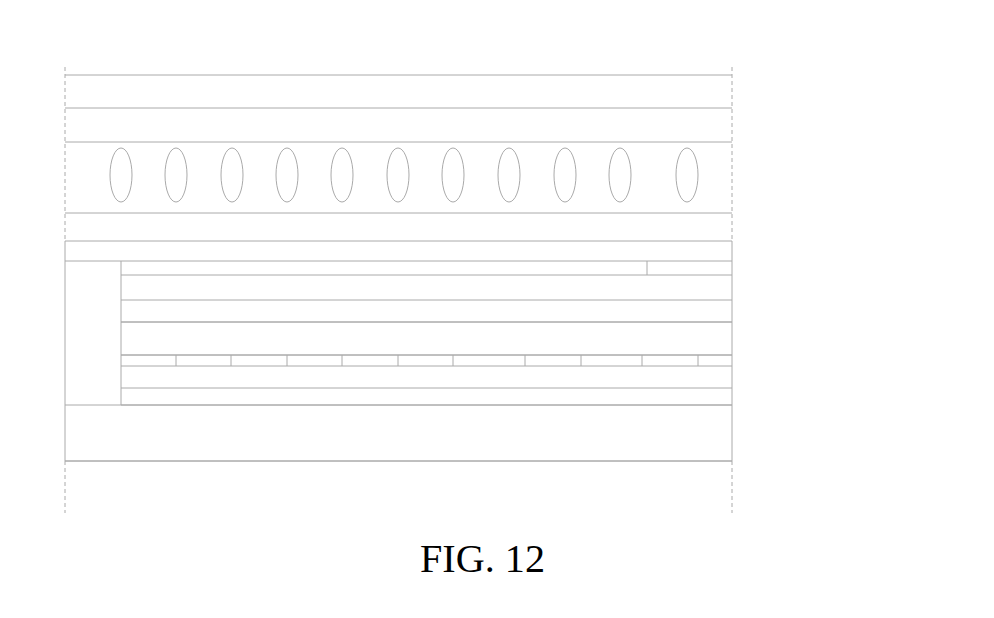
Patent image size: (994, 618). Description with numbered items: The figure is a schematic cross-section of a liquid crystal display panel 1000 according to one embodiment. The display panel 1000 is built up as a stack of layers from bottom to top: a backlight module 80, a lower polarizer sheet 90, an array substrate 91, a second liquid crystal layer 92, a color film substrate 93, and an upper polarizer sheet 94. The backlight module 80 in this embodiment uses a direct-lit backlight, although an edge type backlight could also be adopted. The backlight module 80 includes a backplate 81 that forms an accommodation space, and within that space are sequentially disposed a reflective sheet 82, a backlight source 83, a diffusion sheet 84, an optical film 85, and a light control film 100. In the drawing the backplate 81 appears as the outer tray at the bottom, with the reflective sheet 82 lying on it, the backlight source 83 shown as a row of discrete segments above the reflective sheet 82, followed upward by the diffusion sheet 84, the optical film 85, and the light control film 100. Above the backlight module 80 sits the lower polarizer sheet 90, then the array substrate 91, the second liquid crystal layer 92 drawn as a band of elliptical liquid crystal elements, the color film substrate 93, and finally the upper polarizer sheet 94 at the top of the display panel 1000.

The display panel 1000 is at (190, 42).
The upper polarizer sheet 94 is at (687, 92).
The color film substrate 93 is at (687, 130).
The second liquid crystal layer 92 is at (692, 175).
The array substrate 91 is at (692, 224).
The lower polarizer sheet 90 is at (692, 247).
The light control film 100 is at (697, 281).
The optical film 85 is at (697, 309).
The diffusion sheet 84 is at (697, 339).
The backlight source 83 is at (693, 362).
The reflective sheet 82 is at (697, 392).
The backplate 81 is at (430, 433).
The backlight module 80 is at (451, 361).